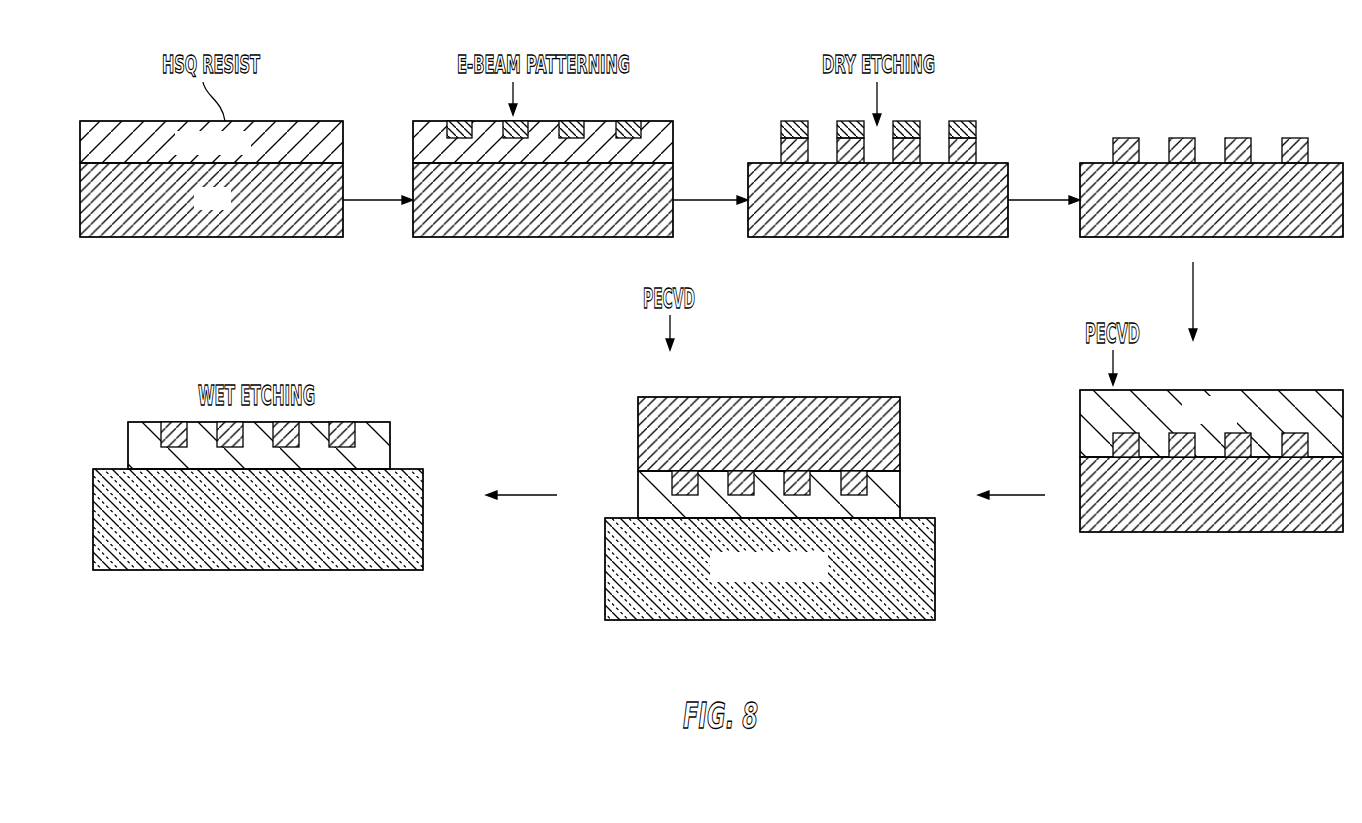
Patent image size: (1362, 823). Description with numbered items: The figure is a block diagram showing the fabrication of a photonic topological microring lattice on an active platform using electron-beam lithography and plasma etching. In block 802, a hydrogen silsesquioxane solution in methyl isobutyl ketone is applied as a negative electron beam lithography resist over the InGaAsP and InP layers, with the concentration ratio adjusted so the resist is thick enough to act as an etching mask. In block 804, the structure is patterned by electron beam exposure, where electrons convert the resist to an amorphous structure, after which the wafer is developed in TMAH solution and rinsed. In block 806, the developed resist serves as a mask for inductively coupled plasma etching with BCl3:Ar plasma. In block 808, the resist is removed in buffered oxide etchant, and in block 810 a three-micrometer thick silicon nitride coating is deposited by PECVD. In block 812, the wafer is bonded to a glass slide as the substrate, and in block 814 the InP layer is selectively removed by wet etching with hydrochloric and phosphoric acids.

The block 802 is at (168, 237).
The block 804 is at (518, 237).
The block 806 is at (853, 237).
The block 808 is at (1186, 237).
The block 810 is at (1290, 390).
The block 812 is at (838, 397).
The block 814 is at (167, 570).